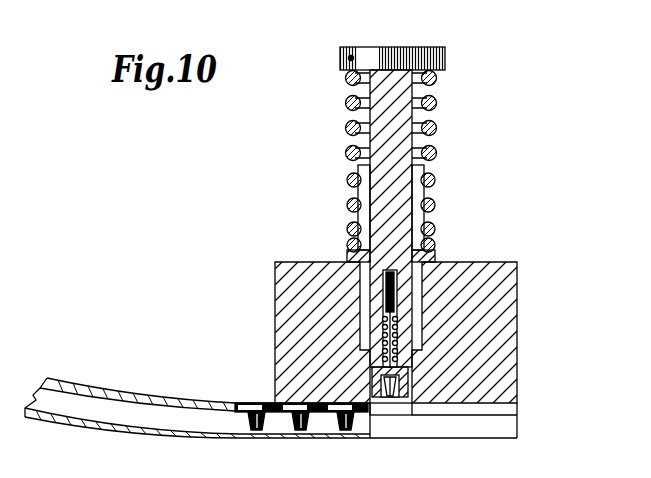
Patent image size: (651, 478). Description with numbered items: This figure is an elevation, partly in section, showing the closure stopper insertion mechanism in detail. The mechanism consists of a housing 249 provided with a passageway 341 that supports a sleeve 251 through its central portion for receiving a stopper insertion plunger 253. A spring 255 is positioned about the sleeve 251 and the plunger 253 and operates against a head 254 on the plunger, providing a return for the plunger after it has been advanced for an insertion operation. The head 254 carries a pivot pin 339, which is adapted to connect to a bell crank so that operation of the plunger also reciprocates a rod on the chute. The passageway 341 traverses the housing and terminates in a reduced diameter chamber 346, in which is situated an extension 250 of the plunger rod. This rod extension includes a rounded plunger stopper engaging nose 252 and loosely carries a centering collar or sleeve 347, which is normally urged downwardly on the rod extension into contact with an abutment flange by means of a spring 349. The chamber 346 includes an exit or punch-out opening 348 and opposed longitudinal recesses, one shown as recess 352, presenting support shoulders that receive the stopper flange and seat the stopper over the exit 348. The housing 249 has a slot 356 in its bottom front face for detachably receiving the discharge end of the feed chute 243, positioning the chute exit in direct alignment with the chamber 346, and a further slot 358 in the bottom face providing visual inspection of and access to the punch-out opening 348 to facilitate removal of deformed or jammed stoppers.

The pivot pin 339 is at (350, 56).
The head 254 is at (446, 50).
The spring 255 is at (348, 103).
The stopper insertion plunger 253 is at (398, 95).
The sleeve 251 is at (418, 196).
The housing 249 is at (517, 278).
The extension of rod 250 is at (397, 322).
The spring 349 is at (382, 336).
The passageway 341 is at (422, 350).
The reduced diameter chamber 346 is at (372, 362).
The centering collar or sleeve 347 is at (398, 386).
The longitudinal recess 352 is at (400, 405).
The exit or punch-out opening 348 is at (398, 438).
The plunger stopper engaging nose 252 is at (391, 388).
The slot 358 is at (520, 432).
The feed chute 243 is at (145, 366).
The slot 356 is at (288, 403).